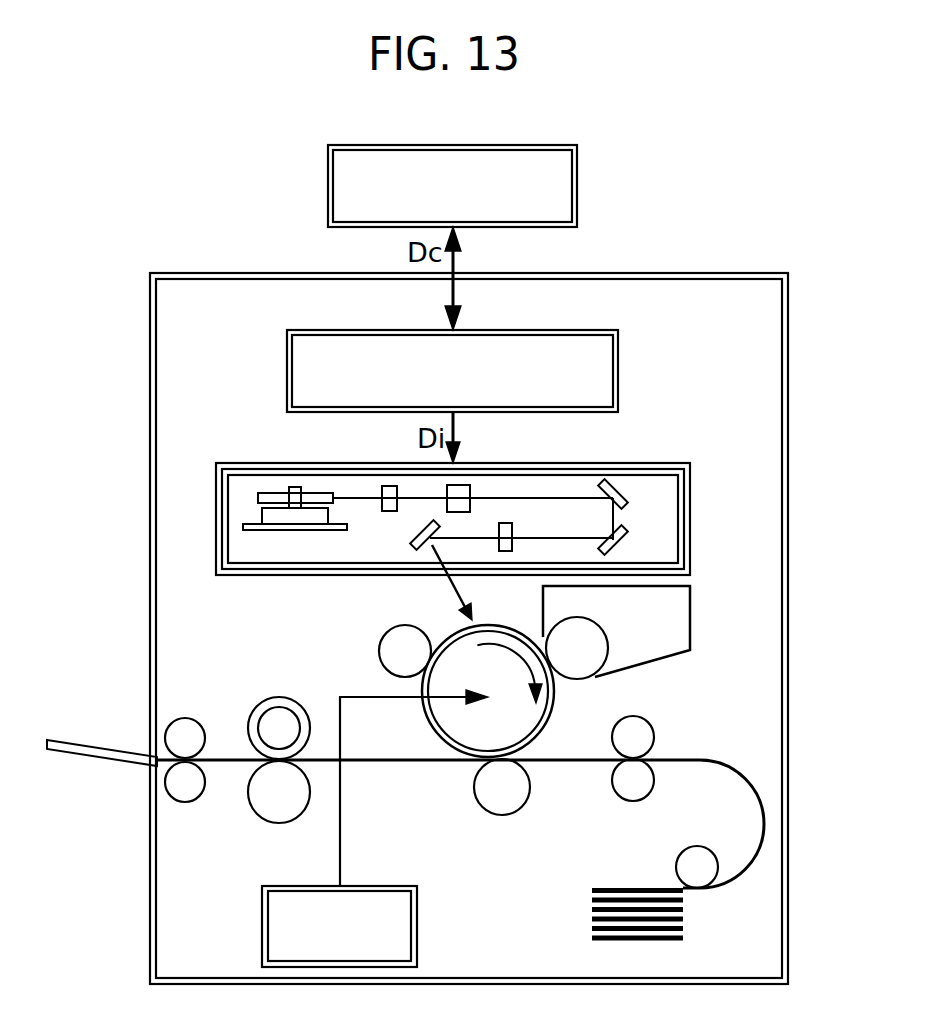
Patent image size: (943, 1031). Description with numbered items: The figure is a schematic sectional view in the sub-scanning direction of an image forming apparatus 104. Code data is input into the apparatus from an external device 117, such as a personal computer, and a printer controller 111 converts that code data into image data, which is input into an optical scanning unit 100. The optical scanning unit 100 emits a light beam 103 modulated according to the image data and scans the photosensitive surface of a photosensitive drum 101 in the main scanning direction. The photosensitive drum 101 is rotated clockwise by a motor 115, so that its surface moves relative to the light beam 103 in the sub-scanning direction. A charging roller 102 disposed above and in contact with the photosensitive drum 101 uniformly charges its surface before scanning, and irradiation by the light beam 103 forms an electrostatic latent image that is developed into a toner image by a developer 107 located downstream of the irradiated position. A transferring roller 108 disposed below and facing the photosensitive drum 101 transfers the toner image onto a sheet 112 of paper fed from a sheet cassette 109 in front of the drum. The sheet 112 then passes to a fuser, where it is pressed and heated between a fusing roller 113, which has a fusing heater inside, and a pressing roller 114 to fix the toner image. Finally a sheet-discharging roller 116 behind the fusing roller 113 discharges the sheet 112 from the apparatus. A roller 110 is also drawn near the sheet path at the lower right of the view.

The optical scanning unit 100 is at (247, 483).
The photosensitive drum 101 is at (553, 700).
The charging roller 102 is at (383, 641).
The light beam 103 is at (447, 603).
The image forming apparatus 104 is at (732, 273).
The developer 107 is at (690, 613).
The transferring roller 108 is at (502, 813).
The sheet cassette 109 is at (595, 944).
The discharge roller 110 is at (697, 849).
The printer controller 111 is at (610, 356).
The sheet 112 is at (385, 762).
The fusing roller 113 is at (268, 718).
The pressing roller 114 is at (255, 801).
The motor 115 is at (270, 939).
The sheet-discharging roller 116 is at (185, 727).
The external device 117 is at (577, 161).